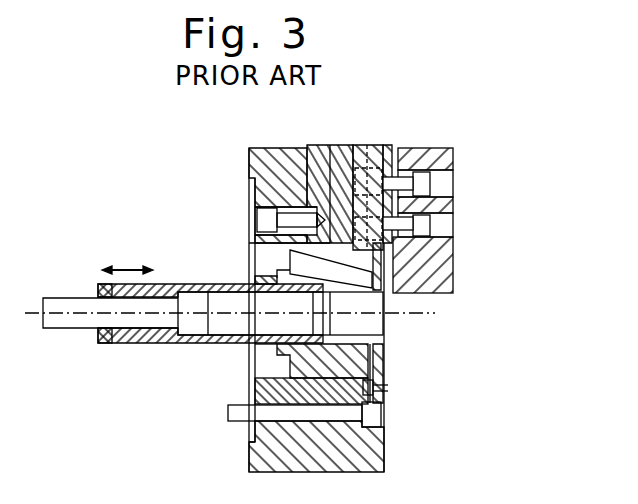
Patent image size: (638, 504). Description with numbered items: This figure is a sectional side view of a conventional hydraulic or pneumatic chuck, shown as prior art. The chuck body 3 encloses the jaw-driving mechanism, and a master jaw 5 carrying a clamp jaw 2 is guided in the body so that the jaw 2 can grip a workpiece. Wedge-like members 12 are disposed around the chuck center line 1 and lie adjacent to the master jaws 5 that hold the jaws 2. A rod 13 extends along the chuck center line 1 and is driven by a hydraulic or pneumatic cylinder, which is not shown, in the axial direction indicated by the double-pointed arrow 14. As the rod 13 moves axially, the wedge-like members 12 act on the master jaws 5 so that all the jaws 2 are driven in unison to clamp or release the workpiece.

The chuck center line 1 is at (424, 316).
The clamp jaw 2 is at (445, 248).
The chuck body 3 is at (281, 139).
The master jaw 5 is at (342, 145).
The wedge-like member 12 is at (380, 290).
The rod 13 is at (182, 284).
The double-pointed arrow 14 is at (127, 268).